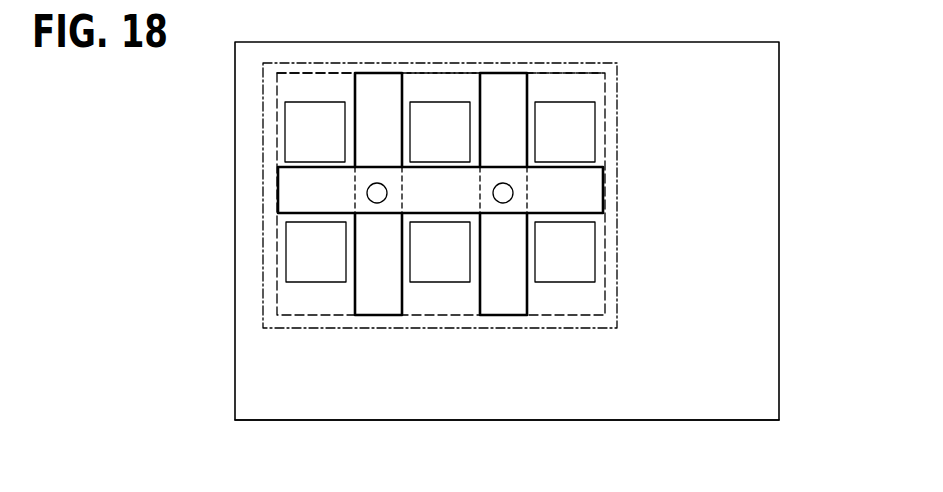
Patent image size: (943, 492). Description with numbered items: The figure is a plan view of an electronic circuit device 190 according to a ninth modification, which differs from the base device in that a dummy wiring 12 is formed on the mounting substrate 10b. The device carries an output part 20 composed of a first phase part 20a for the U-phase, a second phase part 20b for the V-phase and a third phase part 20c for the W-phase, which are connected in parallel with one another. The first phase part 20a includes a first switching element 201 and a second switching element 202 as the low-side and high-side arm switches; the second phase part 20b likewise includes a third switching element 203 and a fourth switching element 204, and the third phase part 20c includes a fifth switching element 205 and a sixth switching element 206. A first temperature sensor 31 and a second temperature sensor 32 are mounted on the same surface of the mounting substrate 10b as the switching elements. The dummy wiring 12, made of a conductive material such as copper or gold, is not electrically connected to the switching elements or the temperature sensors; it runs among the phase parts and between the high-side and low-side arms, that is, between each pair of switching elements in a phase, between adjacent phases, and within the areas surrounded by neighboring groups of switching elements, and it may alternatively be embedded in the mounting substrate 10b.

The electronic circuit device 190 is at (733, 35).
The mounting substrate 10b is at (628, 406).
The output part 20 is at (617, 290).
The first phase part 20a is at (285, 63).
The second phase part 20b is at (408, 73).
The third phase part 20c is at (529, 74).
The dummy wiring 12 is at (284, 215).
The first temperature sensor 31 is at (367, 193).
The second temperature sensor 32 is at (513, 193).
The first switching element 201 is at (307, 282).
The second switching element 202 is at (331, 102).
The third switching element 203 is at (438, 282).
The fourth switching element 204 is at (454, 102).
The fifth switching element 205 is at (566, 282).
The sixth switching element 206 is at (586, 102).